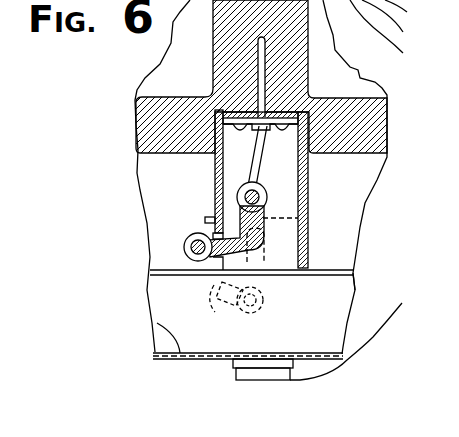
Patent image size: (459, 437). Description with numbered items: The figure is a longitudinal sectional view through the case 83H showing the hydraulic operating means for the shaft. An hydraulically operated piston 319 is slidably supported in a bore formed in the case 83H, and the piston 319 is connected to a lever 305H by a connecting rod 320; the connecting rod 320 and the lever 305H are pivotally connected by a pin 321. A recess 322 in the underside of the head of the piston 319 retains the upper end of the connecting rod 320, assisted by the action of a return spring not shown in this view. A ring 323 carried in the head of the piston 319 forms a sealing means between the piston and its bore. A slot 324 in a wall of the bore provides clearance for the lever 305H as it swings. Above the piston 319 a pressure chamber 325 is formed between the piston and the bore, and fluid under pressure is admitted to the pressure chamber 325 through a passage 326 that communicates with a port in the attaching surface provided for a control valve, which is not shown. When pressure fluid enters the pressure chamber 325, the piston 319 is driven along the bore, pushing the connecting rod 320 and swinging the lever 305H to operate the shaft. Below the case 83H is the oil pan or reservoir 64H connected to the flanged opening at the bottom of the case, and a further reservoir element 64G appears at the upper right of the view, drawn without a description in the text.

The passage 326 is at (266, 60).
The pressure chamber 325 is at (309, 97).
The recess 322 is at (308, 114).
The ring 323 is at (310, 152).
The hydraulically operated piston 319 is at (300, 163).
The connecting rod 320 is at (255, 153).
The pin 321 is at (267, 202).
The slot 324 is at (195, 269).
The lever 305H is at (200, 298).
The oil pan or reservoir 64H is at (157, 323).
The case 83H is at (310, 250).
The outer member 64G is at (416, 9).